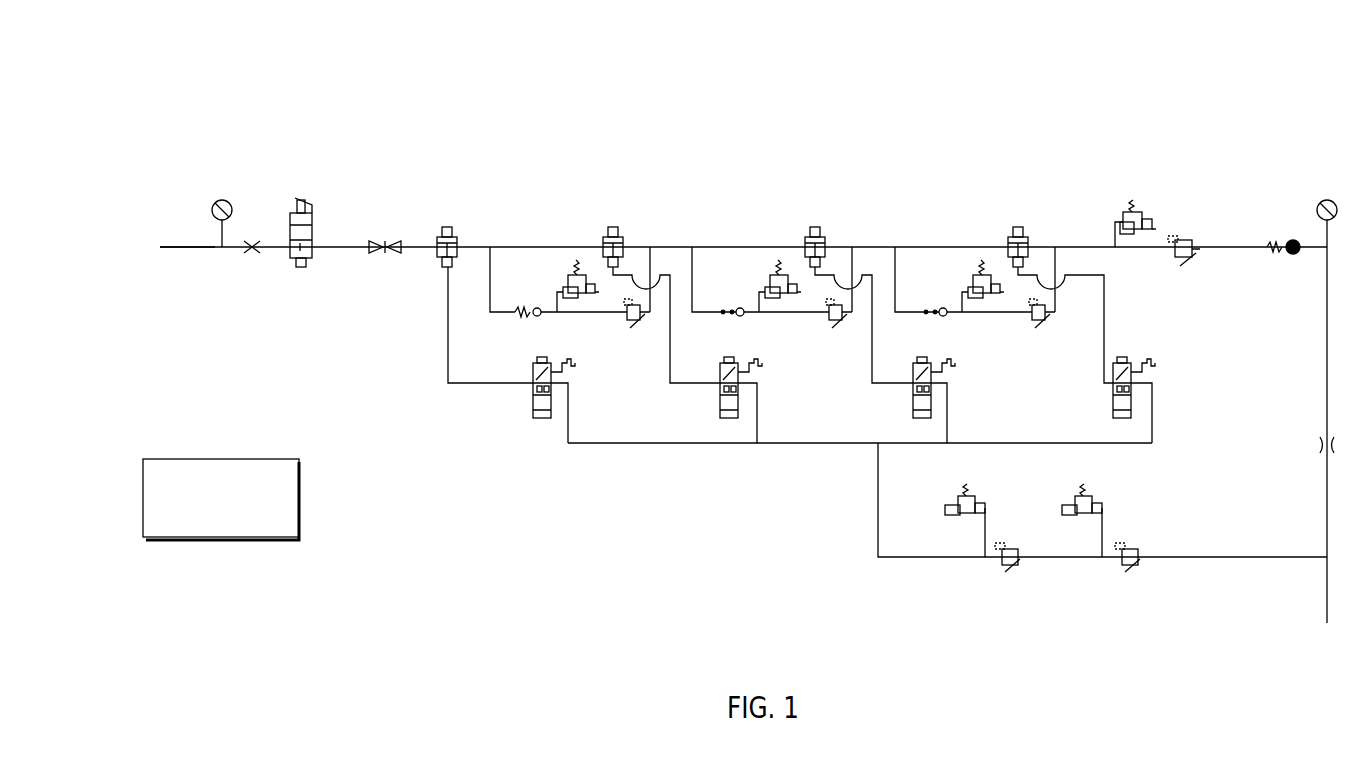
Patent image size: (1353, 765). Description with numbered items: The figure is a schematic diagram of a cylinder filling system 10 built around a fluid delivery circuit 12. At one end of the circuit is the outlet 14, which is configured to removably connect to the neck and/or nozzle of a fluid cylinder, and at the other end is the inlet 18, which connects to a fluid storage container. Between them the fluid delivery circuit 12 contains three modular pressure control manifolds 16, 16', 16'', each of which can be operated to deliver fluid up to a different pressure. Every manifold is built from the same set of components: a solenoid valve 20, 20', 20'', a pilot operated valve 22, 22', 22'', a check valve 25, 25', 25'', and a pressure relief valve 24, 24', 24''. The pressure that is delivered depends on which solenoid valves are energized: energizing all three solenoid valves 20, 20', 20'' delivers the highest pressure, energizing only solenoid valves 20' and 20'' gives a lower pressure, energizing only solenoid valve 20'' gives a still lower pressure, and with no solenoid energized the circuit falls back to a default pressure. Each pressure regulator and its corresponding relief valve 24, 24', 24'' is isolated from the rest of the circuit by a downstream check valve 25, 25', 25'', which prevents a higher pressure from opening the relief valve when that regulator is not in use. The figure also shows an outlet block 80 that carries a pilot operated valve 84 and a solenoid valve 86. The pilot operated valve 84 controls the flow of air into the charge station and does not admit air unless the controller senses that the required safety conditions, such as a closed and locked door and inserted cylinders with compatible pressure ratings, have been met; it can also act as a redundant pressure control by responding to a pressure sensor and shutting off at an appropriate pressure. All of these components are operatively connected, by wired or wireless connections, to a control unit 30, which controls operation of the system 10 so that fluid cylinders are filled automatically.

The cylinder filling system 10 is at (237, 87).
The fluid delivery circuit 12 is at (387, 169).
The outlet 14 is at (165, 248).
The pressure control manifold 16 is at (1004, 267).
The pressure control manifold 16' is at (802, 267).
The pressure control manifold 16'' is at (605, 267).
The inlet 18 is at (1326, 450).
The solenoid valve 20 is at (1120, 420).
The solenoid valve 20' is at (918, 420).
The solenoid valve 20'' is at (725, 419).
The pilot operated valve 22 is at (1056, 226).
The pilot operated valve 22' is at (855, 226).
The pilot operated valve 22'' is at (652, 226).
The pressure relief valve 24 is at (951, 220).
The pressure relief valve 24' is at (746, 220).
The pressure relief valve 24'' is at (548, 227).
The check valve 25 is at (910, 334).
The check valve 25' is at (708, 334).
The check valve 25'' is at (502, 333).
The control unit 30 is at (193, 458).
The outlet block 80 is at (442, 403).
The pilot operated valve 84 is at (446, 226).
The solenoid valve 86 is at (548, 420).